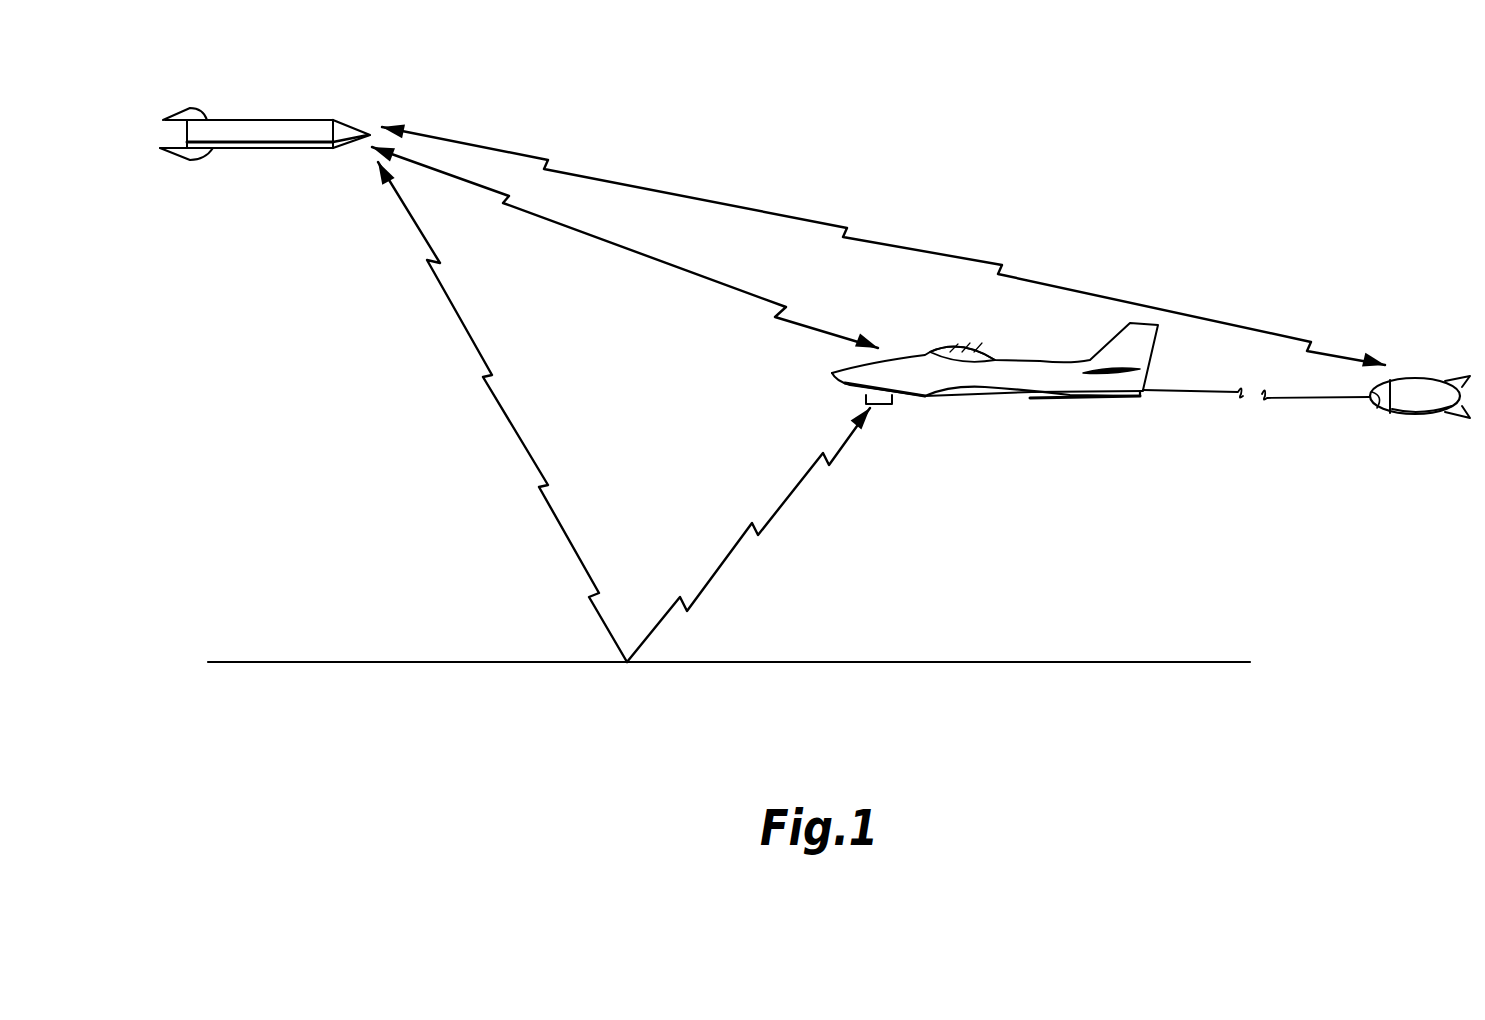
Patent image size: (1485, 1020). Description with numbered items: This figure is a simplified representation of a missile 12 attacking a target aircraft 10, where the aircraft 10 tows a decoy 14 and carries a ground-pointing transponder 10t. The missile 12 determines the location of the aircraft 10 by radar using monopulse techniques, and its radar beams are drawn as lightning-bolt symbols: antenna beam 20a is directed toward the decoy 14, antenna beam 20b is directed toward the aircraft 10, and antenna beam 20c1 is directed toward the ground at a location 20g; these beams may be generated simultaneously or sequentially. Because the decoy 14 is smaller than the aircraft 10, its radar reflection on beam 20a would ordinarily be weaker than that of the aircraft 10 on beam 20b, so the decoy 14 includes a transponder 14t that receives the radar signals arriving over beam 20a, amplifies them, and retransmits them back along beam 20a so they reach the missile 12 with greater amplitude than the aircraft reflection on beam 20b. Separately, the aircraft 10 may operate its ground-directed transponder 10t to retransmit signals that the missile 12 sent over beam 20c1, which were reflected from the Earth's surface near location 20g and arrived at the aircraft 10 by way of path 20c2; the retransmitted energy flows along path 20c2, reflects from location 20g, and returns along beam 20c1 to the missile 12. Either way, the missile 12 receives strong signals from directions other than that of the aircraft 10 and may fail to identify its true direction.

The aircraft 10 is at (978, 400).
The ground-pointing transponder 10t is at (889, 406).
The missile 12 is at (262, 121).
The decoy 14 is at (1421, 378).
The transponder 14t is at (1377, 410).
The antenna beam 20a is at (794, 211).
The antenna beam 20b is at (689, 286).
The antenna beam 20c1 is at (518, 429).
The path 20c2 is at (748, 535).
The ground location 20g is at (627, 664).